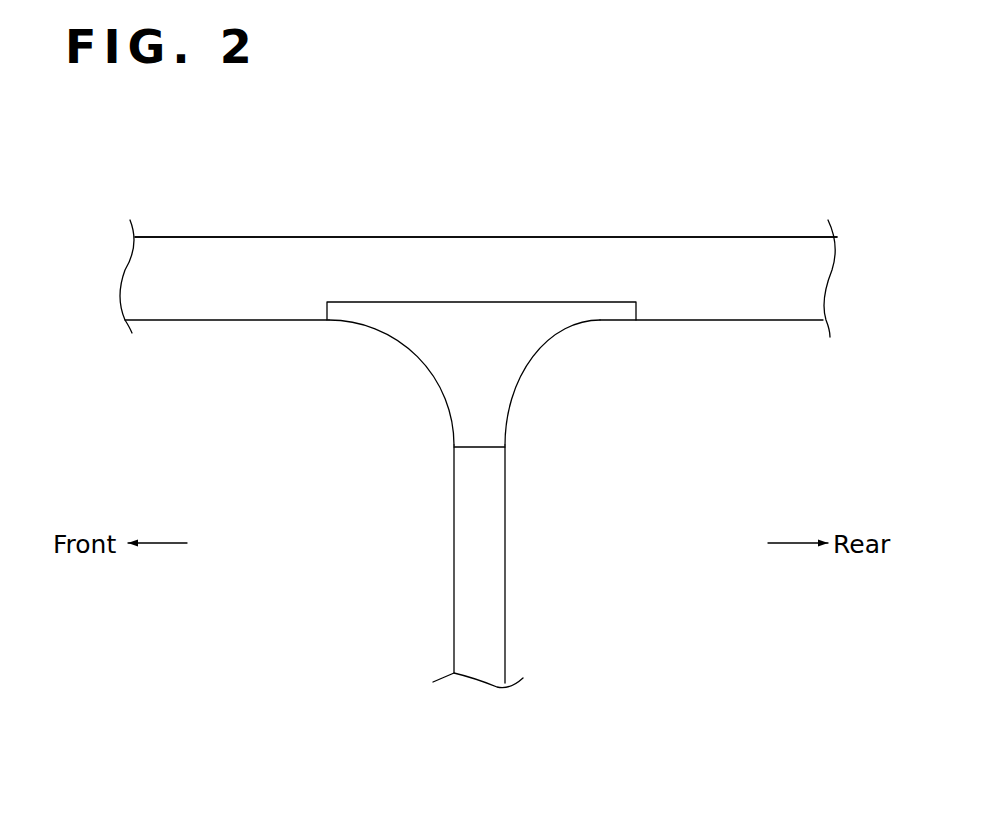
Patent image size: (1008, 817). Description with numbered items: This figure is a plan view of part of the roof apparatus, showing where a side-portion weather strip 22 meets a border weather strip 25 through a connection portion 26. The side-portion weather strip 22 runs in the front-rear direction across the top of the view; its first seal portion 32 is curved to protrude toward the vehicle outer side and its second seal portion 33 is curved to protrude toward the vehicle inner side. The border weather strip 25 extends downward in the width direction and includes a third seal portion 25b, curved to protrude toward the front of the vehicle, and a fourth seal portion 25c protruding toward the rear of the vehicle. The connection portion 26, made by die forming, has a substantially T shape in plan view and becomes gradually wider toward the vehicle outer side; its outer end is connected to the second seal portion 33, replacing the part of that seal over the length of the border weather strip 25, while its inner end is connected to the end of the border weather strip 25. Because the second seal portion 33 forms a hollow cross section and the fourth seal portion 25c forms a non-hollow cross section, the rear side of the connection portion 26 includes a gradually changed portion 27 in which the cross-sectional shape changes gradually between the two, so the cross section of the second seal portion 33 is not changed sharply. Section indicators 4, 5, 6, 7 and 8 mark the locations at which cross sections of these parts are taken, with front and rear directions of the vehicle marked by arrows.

The section line IV-IV 4 is at (790, 212).
The section line V-V 5 is at (430, 543).
The surface portion 6 is at (408, 220).
The surface portion 7 is at (577, 212).
The surface portion 8 is at (522, 217).
The side-portion weather strip 22 is at (675, 235).
The border weather strip 25 is at (477, 566).
The third seal portion 25b is at (454, 605).
The fourth seal portion 25c is at (505, 583).
The connection portion 26 is at (398, 343).
The gradually changed portion 27 is at (507, 380).
The first seal portion 32 is at (232, 238).
The second seal portion 33 is at (232, 320).